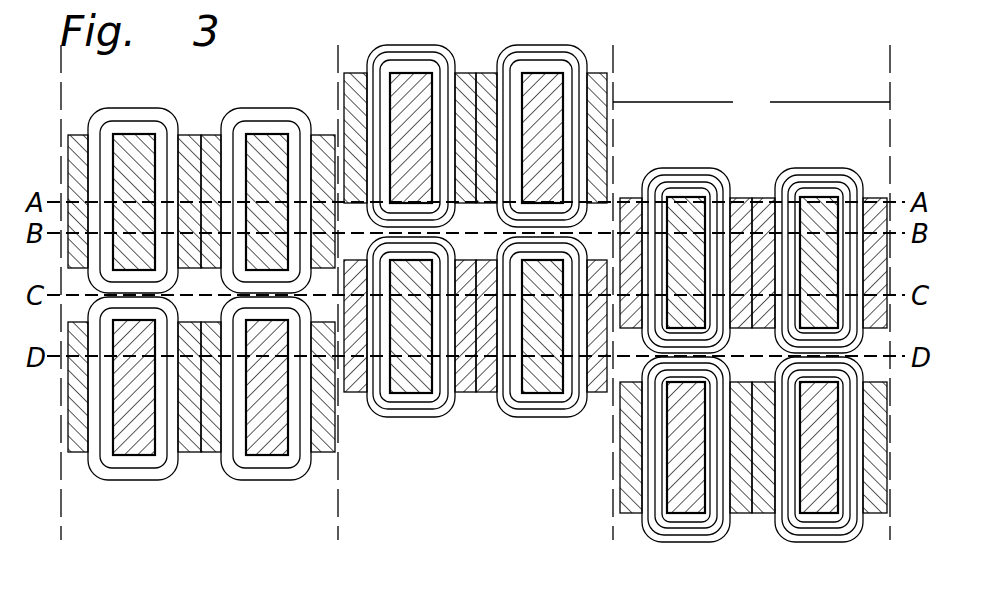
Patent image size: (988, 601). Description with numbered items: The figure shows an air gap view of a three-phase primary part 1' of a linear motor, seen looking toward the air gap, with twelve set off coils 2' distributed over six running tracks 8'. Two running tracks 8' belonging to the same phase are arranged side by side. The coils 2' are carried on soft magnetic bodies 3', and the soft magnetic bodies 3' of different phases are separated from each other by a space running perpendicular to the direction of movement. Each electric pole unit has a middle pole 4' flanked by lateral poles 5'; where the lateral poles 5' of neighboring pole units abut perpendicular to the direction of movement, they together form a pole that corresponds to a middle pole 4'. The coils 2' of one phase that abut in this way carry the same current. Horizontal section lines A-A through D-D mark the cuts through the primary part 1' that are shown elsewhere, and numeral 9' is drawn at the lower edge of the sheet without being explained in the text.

The primary part 1' is at (475, 271).
The coil 2' is at (276, 416).
The soft magnetic body 3' is at (201, 428).
The middle pole 4' is at (805, 477).
The lateral pole 5' is at (719, 487).
The running track 8' is at (751, 107).
The stator 9' is at (440, 597).